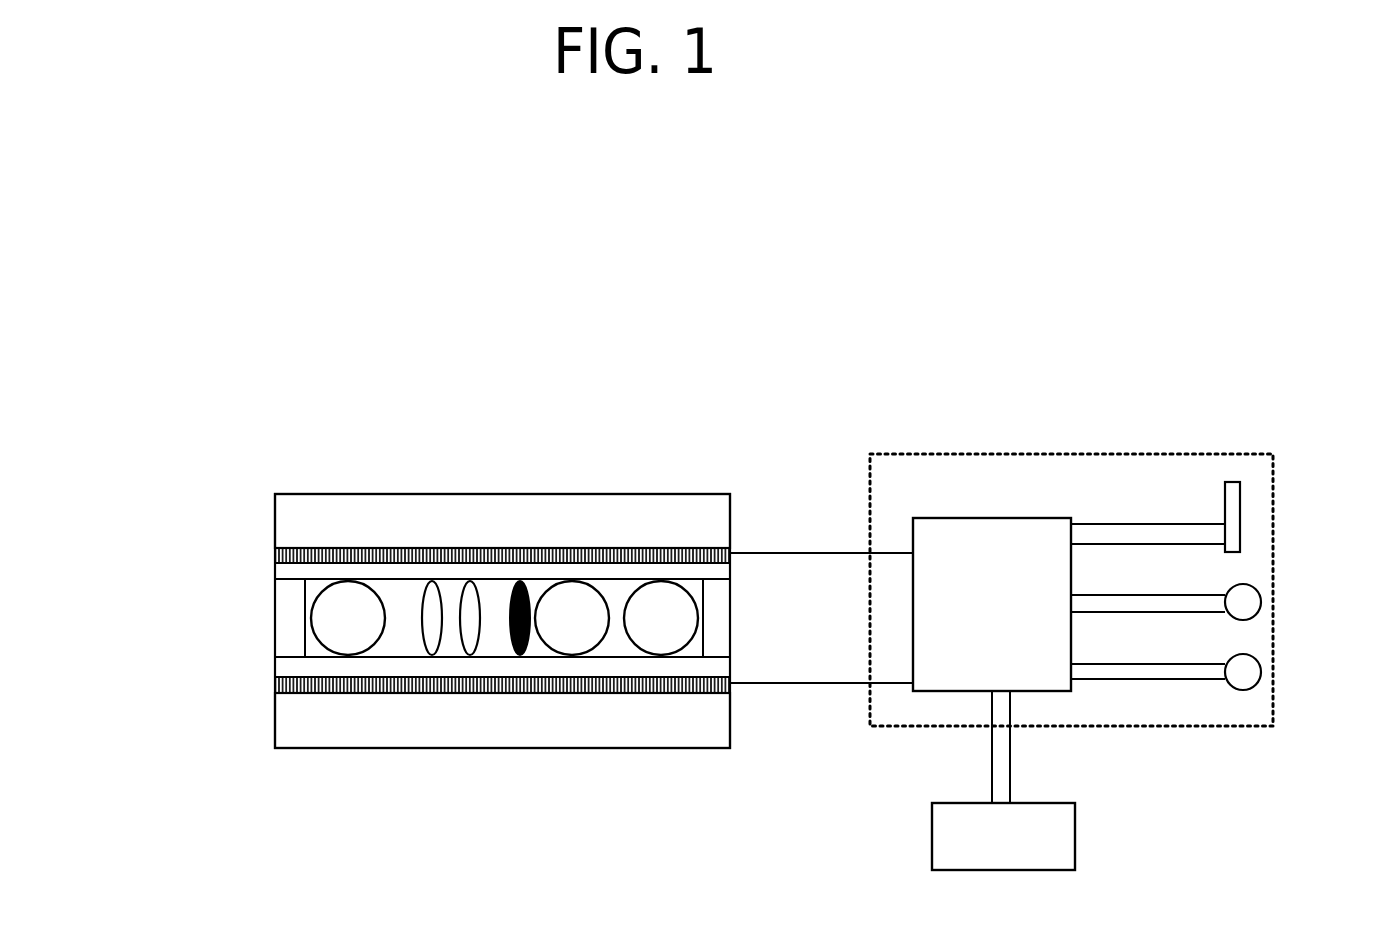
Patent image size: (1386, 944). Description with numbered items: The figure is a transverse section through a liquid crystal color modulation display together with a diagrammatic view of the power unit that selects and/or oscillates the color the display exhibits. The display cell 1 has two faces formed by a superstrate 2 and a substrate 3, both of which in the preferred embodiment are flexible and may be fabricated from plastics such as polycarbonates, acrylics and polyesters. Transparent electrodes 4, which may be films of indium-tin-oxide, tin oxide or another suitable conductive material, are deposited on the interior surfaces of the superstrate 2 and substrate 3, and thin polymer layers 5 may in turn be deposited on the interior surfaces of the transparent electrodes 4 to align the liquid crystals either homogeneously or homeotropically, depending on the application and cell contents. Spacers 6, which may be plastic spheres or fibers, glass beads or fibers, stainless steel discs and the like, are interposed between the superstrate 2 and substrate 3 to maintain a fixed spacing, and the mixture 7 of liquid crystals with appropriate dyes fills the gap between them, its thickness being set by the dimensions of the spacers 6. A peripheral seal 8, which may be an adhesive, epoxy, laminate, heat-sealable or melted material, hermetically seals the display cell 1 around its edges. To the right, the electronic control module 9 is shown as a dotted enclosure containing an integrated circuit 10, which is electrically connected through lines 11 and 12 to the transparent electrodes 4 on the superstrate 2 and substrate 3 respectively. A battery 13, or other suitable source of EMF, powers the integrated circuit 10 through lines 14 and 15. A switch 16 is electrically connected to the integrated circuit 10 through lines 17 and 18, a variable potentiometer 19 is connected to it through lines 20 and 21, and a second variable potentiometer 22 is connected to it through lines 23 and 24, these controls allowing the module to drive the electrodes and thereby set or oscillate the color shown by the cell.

The display cell 1 is at (503, 487).
The superstrate 2 is at (408, 515).
The substrate 3 is at (287, 718).
The transparent electrodes 4 is at (275, 554).
The thin polymer layers 5 is at (275, 573).
The spacers 6 is at (325, 597).
The mixture of liquid crystals with dyes 7 is at (520, 657).
The peripheral seal 8 is at (282, 612).
The electronic control module 9 is at (1042, 454).
The integrated circuit 10 is at (971, 518).
The line 11 is at (798, 553).
The line 12 is at (782, 683).
The battery 13 is at (932, 838).
The line 14 is at (992, 751).
The line 15 is at (1010, 757).
The switch 16 is at (1240, 503).
The line 17 is at (1159, 524).
The line 18 is at (1181, 544).
The variable potentiometer 19 is at (1261, 602).
The line 20 is at (1120, 595).
The line 21 is at (1195, 612).
The variable potentiometer 22 is at (1261, 672).
The line 23 is at (1114, 664).
The line 24 is at (1165, 679).